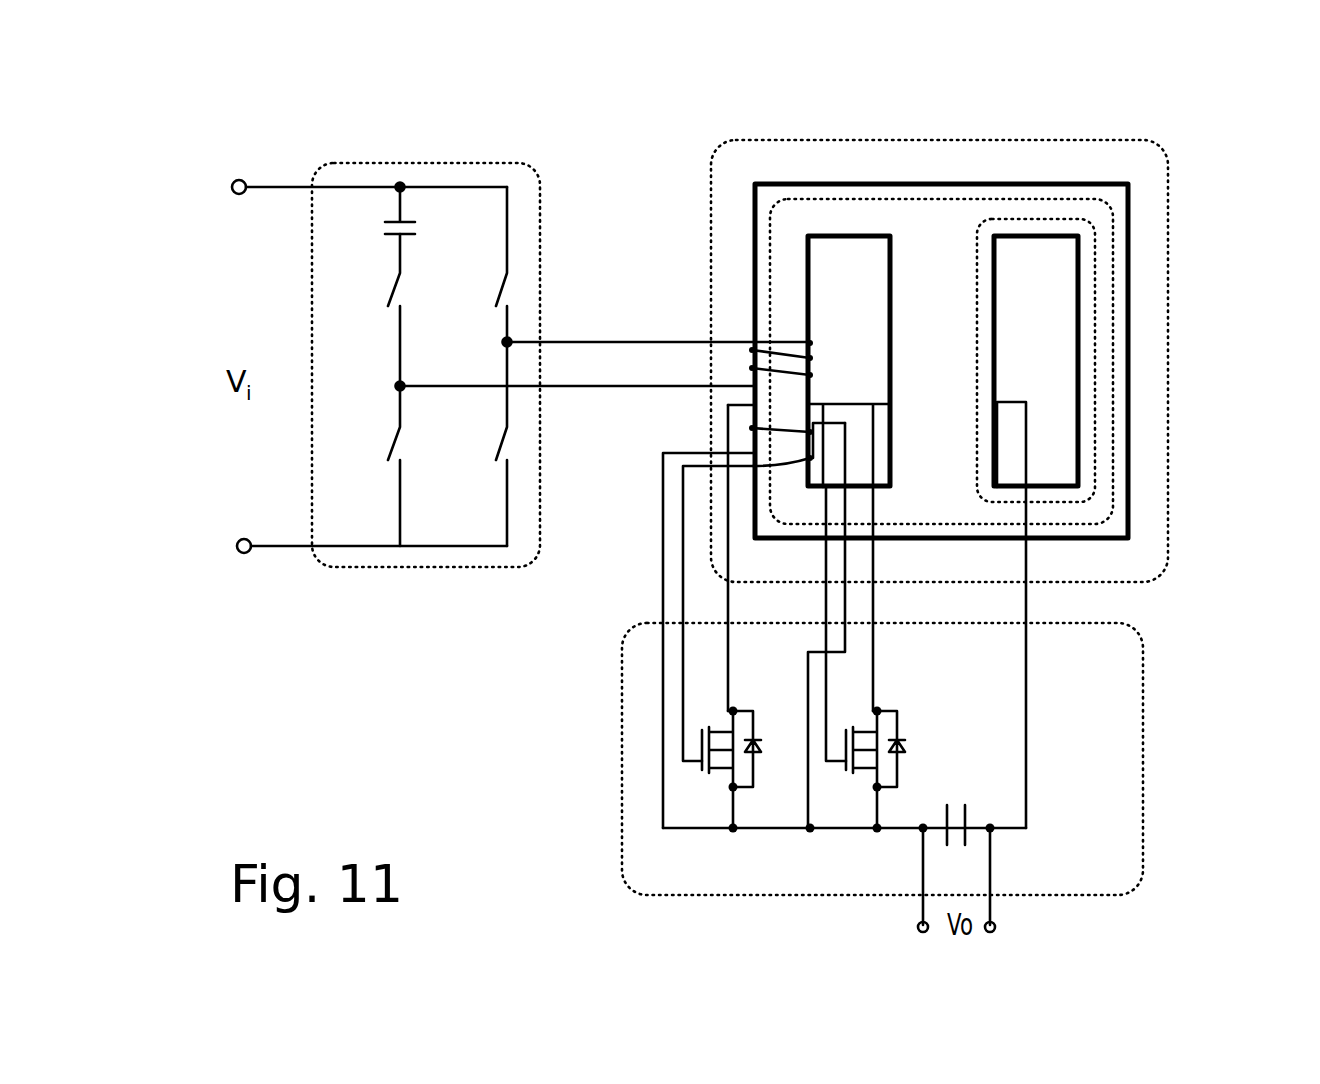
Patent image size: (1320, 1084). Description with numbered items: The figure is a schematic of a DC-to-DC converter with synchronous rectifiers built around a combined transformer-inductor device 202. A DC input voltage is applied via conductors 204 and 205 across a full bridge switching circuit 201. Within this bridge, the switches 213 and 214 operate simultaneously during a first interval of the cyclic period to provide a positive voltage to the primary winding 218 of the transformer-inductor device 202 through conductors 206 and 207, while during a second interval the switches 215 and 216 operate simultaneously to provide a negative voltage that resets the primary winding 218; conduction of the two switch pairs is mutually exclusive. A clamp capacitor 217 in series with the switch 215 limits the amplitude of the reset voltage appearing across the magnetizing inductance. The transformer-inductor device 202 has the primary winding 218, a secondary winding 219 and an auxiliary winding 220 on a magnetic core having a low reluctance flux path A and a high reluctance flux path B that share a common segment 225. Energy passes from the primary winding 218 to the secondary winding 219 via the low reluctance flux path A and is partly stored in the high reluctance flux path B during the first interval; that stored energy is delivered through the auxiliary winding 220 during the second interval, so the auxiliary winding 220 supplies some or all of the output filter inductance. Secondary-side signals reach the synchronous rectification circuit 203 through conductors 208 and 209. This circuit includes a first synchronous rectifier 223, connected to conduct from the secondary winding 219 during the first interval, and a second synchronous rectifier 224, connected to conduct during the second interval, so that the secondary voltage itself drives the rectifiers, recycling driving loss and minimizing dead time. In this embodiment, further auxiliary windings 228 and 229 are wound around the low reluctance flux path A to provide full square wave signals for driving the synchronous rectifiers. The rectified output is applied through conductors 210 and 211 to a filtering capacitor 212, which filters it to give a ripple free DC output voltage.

The full bridge switching circuit 201 is at (447, 163).
The combined transformer-inductor device 202 is at (1047, 162).
The synchronous rectification circuit 203 is at (1128, 828).
The conductor 204 is at (276, 186).
The conductor 205 is at (278, 549).
The conductor 206 is at (628, 338).
The conductor 207 is at (583, 388).
The conductor 208 is at (875, 630).
The conductor 209 is at (731, 630).
The conductor 210 is at (1030, 758).
The conductor 211 is at (898, 830).
The filtering capacitor 212 is at (956, 848).
The switch 213 is at (478, 264).
The switch 214 is at (371, 466).
The switch 215 is at (371, 310).
The switch 216 is at (478, 444).
The clamp capacitor 217 is at (376, 218).
The primary winding 218 is at (752, 348).
The secondary winding 219 is at (846, 402).
The auxiliary winding 220 is at (1010, 398).
The first synchronous rectifier 223 is at (700, 748).
The second synchronous rectifier 224 is at (844, 748).
The common segment 225 is at (1104, 310).
The auxiliary winding 228 is at (823, 422).
The auxiliary winding 229 is at (742, 452).
The low reluctance flux path A is at (1112, 219).
The high reluctance flux path B is at (1095, 405).